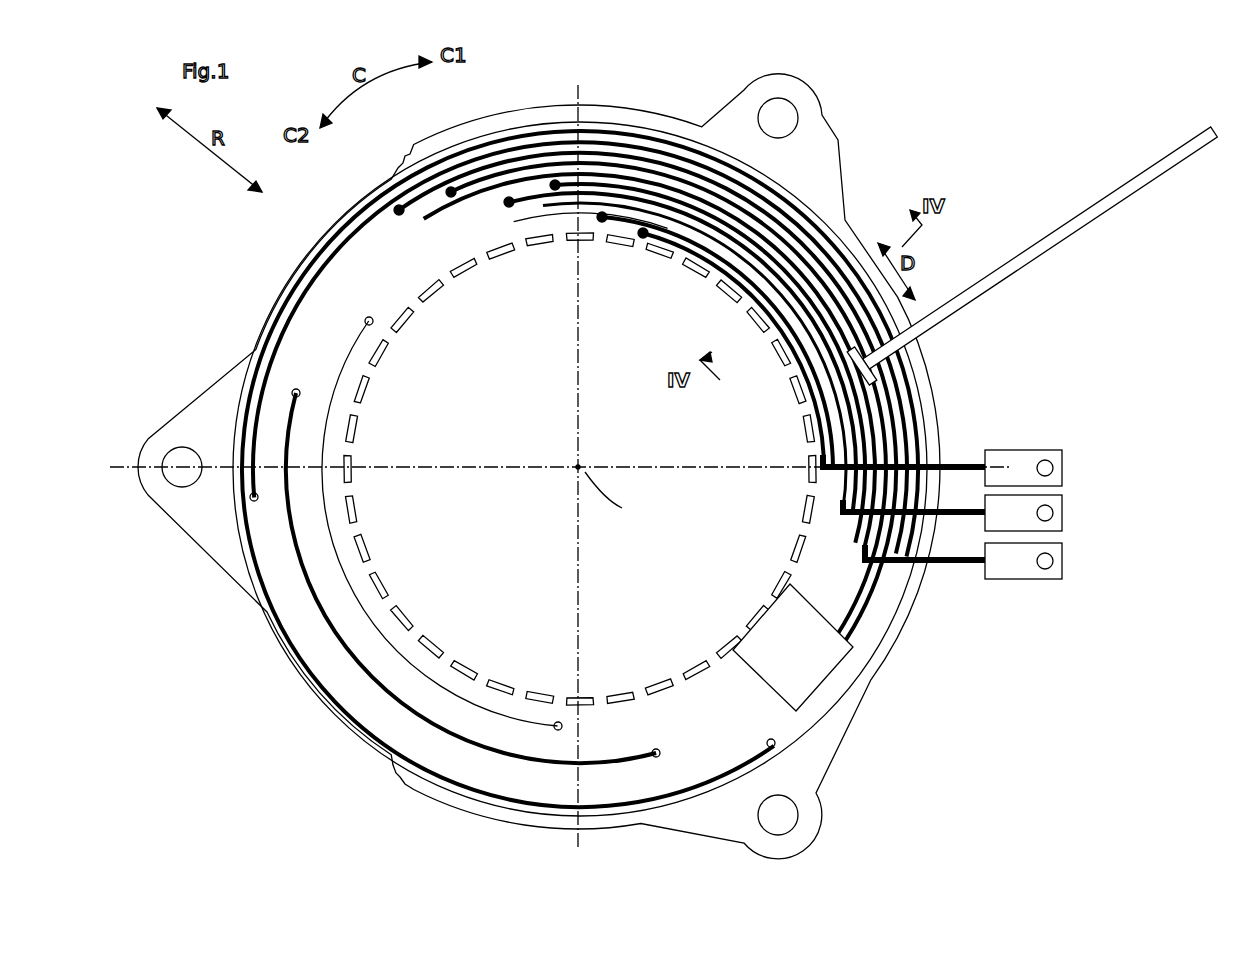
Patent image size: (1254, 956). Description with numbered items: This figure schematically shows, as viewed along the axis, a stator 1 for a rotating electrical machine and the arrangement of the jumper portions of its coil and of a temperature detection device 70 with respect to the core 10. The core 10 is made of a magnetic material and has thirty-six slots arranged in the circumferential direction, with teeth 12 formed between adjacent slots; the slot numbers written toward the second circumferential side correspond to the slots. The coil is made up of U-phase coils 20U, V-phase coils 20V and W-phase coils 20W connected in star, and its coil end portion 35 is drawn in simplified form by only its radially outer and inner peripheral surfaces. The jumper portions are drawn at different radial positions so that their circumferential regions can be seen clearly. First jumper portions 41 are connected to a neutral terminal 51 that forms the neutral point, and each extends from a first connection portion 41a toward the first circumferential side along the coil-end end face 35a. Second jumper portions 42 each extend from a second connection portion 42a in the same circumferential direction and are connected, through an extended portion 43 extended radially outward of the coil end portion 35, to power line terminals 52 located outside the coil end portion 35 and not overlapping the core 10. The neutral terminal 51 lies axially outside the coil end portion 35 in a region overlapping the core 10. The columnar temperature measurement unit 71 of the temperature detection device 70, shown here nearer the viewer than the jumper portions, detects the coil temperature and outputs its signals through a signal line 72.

The stator 1 is at (1012, 122).
The core 10 is at (262, 640).
The teeth 12 is at (410, 622).
The U-phase coils 20U is at (645, 130).
The V-phase coils 20V is at (470, 145).
The W-phase coils 20W is at (770, 205).
The coil end portion 35 is at (803, 735).
The coil-end end face 35a is at (613, 723).
The first jumper portions 41 is at (320, 270).
The first connection portion 41a is at (372, 325).
The second jumper portions 42 is at (740, 195).
The second connection portion 42a is at (449, 188).
The extended portion 43 is at (945, 615).
The neutral terminal 51 is at (832, 672).
The power line terminals 52 is at (1065, 468).
The temperature detection device 70 is at (1095, 240).
The temperature measurement unit 71 is at (798, 378).
The signal line 72 is at (908, 388).